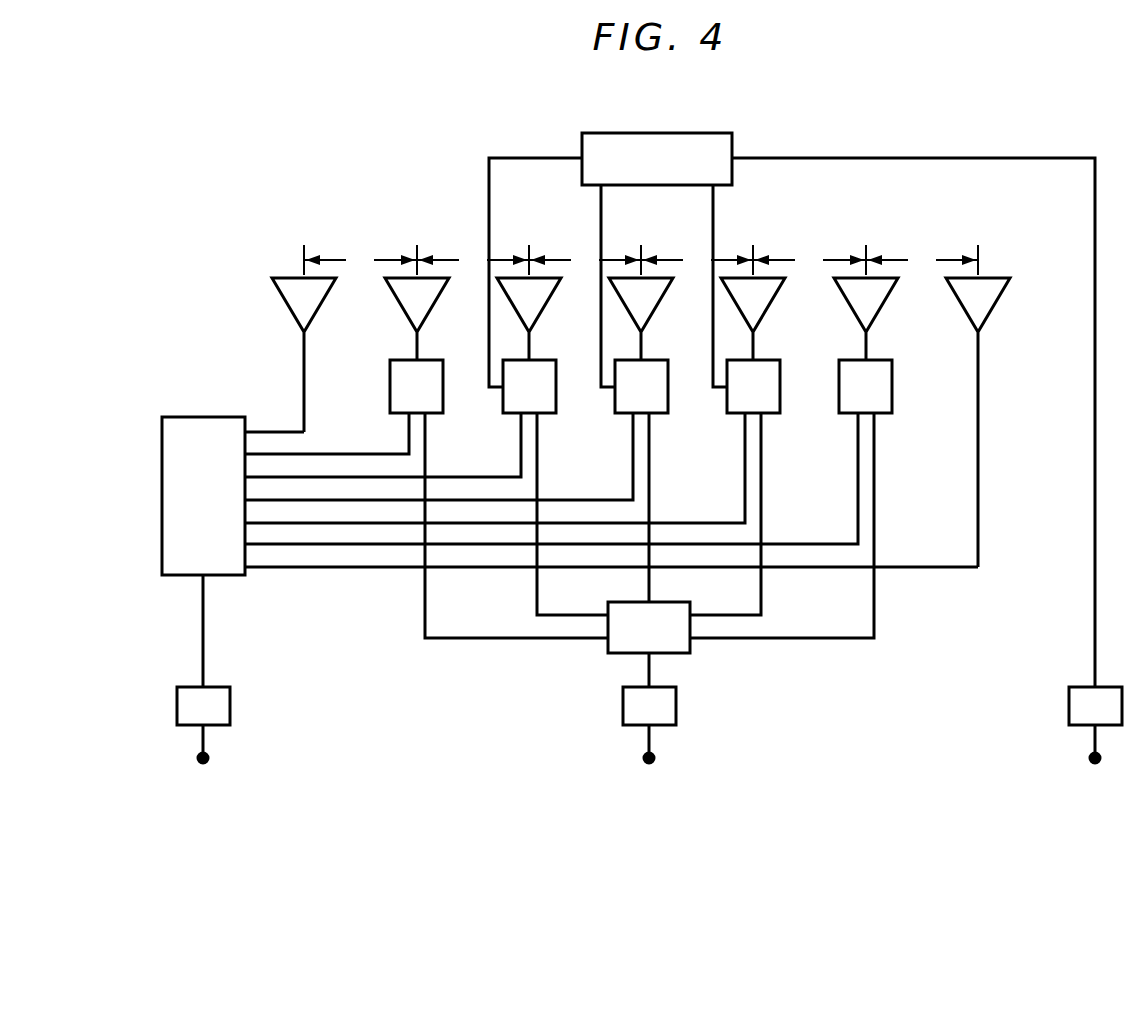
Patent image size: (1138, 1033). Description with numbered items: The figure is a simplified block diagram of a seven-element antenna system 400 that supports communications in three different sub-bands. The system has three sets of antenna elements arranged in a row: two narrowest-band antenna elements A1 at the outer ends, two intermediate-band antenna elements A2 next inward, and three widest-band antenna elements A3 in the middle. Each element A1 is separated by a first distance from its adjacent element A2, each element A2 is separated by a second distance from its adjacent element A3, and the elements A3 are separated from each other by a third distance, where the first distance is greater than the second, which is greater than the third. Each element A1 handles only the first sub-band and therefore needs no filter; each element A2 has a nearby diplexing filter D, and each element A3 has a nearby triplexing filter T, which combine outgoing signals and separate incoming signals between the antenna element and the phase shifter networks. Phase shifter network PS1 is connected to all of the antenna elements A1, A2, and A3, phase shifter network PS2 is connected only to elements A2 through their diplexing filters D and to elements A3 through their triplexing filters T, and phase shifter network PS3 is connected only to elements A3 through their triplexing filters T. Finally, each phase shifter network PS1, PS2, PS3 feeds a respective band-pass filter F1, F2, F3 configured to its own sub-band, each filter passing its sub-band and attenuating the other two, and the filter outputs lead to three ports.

The seven-element antenna system 400 is at (638, 96).
The narrowest-band antenna element A1 is at (641, 390).
The intermediate-band antenna element A2 is at (641, 287).
The widest-band antenna element A3 is at (641, 287).
The diplexing filter D is at (641, 386).
The triplexing filter T is at (641, 386).
The phase shifter network PS1 is at (570, 550).
The phase shifter network PS2 is at (649, 550).
The phase shifter network PS3 is at (792, 410).
The band-pass filter F1 is at (203, 744).
The band-pass filter F2 is at (649, 744).
The band-pass filter F3 is at (1095, 744).